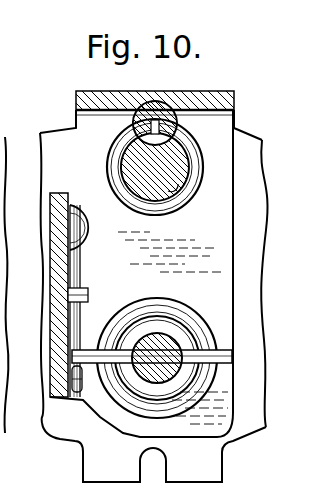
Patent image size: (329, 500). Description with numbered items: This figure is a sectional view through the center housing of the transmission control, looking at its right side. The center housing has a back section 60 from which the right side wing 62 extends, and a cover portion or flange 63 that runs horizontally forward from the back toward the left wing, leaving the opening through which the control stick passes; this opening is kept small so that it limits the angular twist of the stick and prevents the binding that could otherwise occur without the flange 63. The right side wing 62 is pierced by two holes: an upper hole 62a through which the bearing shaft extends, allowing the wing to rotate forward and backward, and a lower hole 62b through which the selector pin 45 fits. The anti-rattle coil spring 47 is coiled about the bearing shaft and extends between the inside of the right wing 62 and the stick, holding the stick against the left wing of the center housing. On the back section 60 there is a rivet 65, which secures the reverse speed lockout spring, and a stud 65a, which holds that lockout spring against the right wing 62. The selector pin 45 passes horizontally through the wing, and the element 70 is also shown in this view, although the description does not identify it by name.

The selector pin 45 is at (150, 368).
The anti-rattle coil spring 47 is at (200, 167).
The back section 60 is at (50, 273).
The right side wing 62 is at (215, 243).
The hole 62a is at (176, 199).
The hole 62b is at (158, 336).
The cover portion or flange 63 is at (88, 91).
The rivet 65 is at (99, 210).
The stud 65a is at (88, 294).
The pin 70 is at (222, 350).